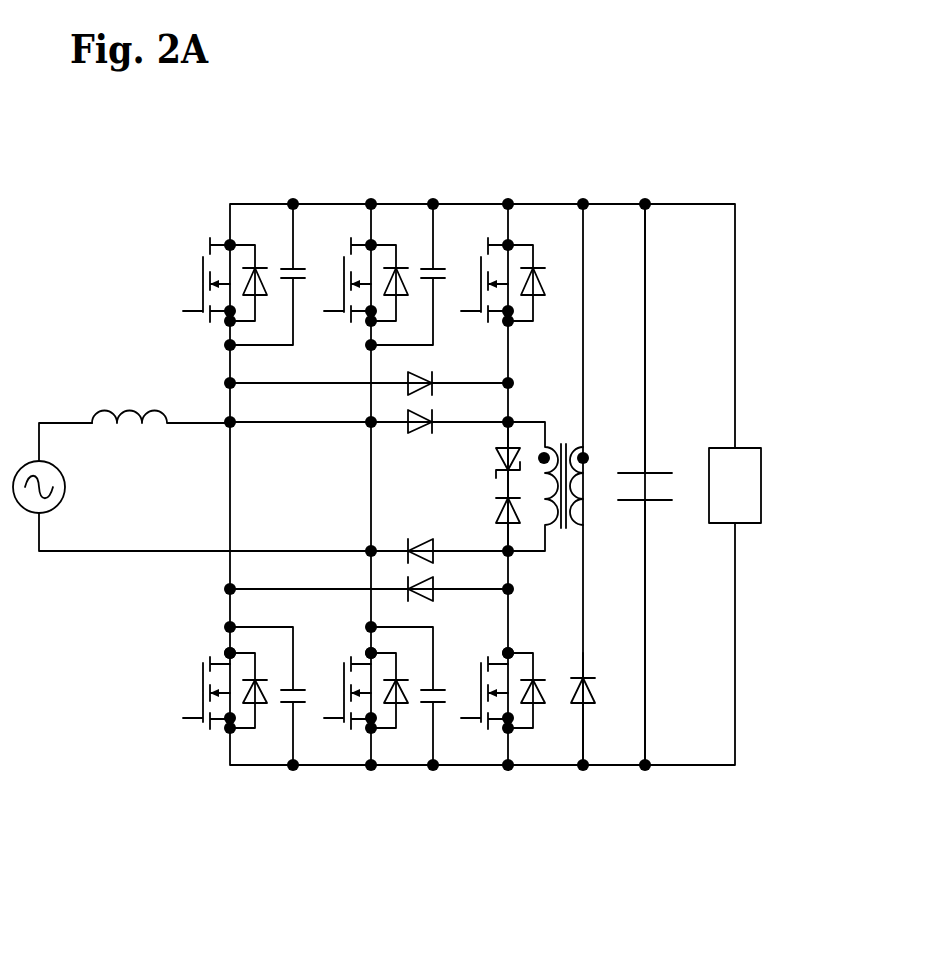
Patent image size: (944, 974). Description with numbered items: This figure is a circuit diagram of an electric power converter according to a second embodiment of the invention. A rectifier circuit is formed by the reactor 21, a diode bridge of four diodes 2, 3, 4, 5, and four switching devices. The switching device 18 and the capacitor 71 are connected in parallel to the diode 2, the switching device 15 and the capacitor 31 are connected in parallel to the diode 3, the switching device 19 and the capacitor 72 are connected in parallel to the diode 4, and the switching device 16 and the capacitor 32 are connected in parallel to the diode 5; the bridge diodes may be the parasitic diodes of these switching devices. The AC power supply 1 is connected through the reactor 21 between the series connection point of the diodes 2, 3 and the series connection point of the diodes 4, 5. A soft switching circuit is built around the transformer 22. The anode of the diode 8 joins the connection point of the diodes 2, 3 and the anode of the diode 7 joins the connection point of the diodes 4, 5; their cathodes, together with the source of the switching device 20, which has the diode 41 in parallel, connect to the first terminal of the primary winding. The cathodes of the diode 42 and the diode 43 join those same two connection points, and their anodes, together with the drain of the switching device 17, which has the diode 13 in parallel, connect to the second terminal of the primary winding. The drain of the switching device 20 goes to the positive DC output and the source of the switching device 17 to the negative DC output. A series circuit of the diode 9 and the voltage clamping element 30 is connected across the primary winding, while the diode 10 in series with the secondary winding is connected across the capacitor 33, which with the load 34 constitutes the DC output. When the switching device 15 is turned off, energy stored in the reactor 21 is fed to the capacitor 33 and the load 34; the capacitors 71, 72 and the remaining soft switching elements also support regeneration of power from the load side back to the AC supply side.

The AC power supply 1 is at (72, 486).
The reactor 21 is at (130, 398).
The switching device 18 is at (193, 280).
The diode 2 is at (273, 216).
The capacitor 71 is at (303, 218).
The switching device 19 is at (353, 218).
The diode 4 is at (407, 218).
The capacitor 72 is at (442, 218).
The switching device 20 is at (490, 218).
The diode 41 is at (542, 218).
The diode 8 is at (405, 390).
The diode 7 is at (418, 438).
The diode 43 is at (420, 536).
The diode 42 is at (410, 598).
The voltage clamping element 30 is at (490, 457).
The diode 9 is at (488, 522).
The transformer 22 is at (562, 437).
The capacitor 33 is at (657, 468).
The load 34 is at (768, 514).
The switching device 15 is at (205, 737).
The diode 3 is at (250, 708).
The capacitor 31 is at (288, 708).
The switching device 16 is at (345, 737).
The diode 5 is at (391, 708).
The capacitor 32 is at (428, 708).
The switching device 17 is at (480, 735).
The diode 13 is at (527, 708).
The diode 10 is at (573, 708).